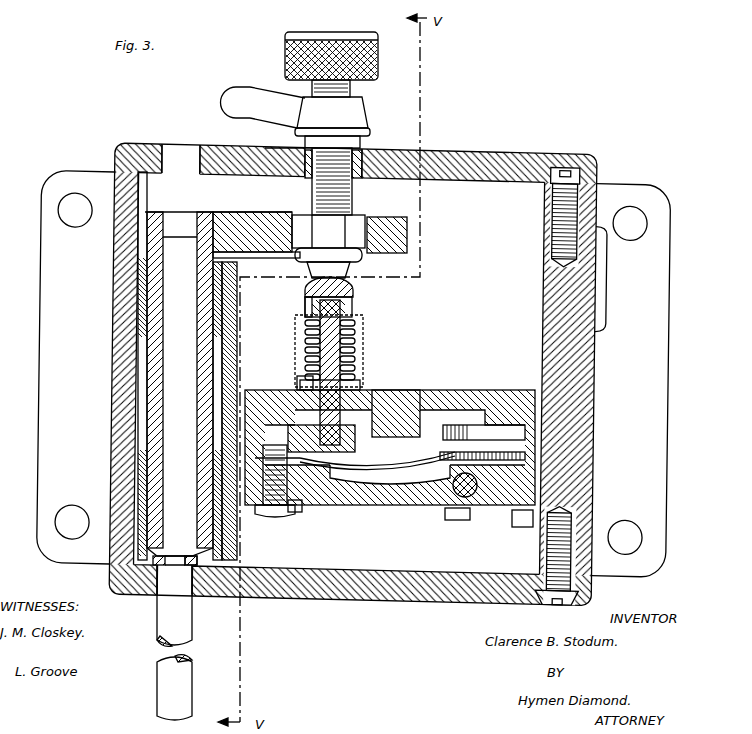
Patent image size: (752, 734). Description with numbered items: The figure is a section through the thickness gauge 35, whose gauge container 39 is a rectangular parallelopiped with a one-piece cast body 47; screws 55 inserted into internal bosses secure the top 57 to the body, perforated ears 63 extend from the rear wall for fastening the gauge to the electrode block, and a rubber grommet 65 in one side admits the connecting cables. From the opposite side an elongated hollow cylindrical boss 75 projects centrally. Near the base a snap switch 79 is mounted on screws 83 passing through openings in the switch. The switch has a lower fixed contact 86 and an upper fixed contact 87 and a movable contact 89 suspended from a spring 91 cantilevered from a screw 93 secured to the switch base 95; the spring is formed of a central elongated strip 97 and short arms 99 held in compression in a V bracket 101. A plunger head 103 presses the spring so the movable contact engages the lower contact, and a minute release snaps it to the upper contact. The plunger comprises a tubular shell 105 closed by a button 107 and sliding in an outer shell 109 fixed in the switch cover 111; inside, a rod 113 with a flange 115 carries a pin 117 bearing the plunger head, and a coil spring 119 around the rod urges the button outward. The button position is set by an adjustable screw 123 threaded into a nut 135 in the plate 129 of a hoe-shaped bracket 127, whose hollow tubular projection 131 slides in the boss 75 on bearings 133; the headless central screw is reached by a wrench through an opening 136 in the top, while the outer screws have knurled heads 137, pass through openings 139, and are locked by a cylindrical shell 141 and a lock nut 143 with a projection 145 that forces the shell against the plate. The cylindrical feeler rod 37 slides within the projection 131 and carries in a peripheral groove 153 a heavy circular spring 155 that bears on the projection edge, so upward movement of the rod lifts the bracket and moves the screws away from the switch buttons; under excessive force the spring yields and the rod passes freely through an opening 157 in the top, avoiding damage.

The thickness gauge 35 is at (703, 404).
The feeler rod 37 is at (158, 605).
The gauge container 39 is at (150, 560).
The body 47 is at (580, 357).
The screws 55 is at (561, 160).
The top 57 is at (470, 163).
The perforated ears 63 is at (52, 192).
The rubber grommet 65 is at (609, 268).
The elongated boss 75 is at (238, 325).
The snap switch 79 is at (392, 535).
The screws 83 is at (448, 512).
The lower fixed contact 86 is at (485, 514).
The upper fixed contact 87 is at (470, 422).
The movable contact 89 is at (452, 450).
The spring 91 is at (448, 482).
The screw 93 is at (280, 512).
The base 95 is at (292, 512).
The central elongated strip 97 is at (396, 462).
The short arms 99 is at (377, 469).
The V bracket 101 is at (390, 476).
The plunger head 103 is at (362, 405).
The tubular shell 105 is at (353, 312).
The button 107 is at (304, 291).
The outer shell 109 is at (358, 344).
The cover 111 is at (410, 405).
The rod 113 is at (300, 356).
The flange 115 is at (304, 386).
The pin 117 is at (352, 385).
The coil spring 119 is at (303, 307).
The adjustable screw 123 is at (350, 196).
The bracket 127 is at (226, 212).
The plate 129 is at (262, 220).
The hollow tubular projection 131 is at (150, 290).
The bearings 133 is at (138, 318).
The nut 135 is at (336, 252).
The opening 136 is at (265, 150).
The knurled head 137 is at (347, 32).
The openings 139 is at (296, 175).
The cylindrical shell 141 is at (363, 139).
The lock nut 143 is at (360, 112).
The projection 145 is at (237, 90).
The peripheral groove 153 is at (193, 592).
The circular spring 155 is at (157, 572).
The opening 157 is at (162, 163).